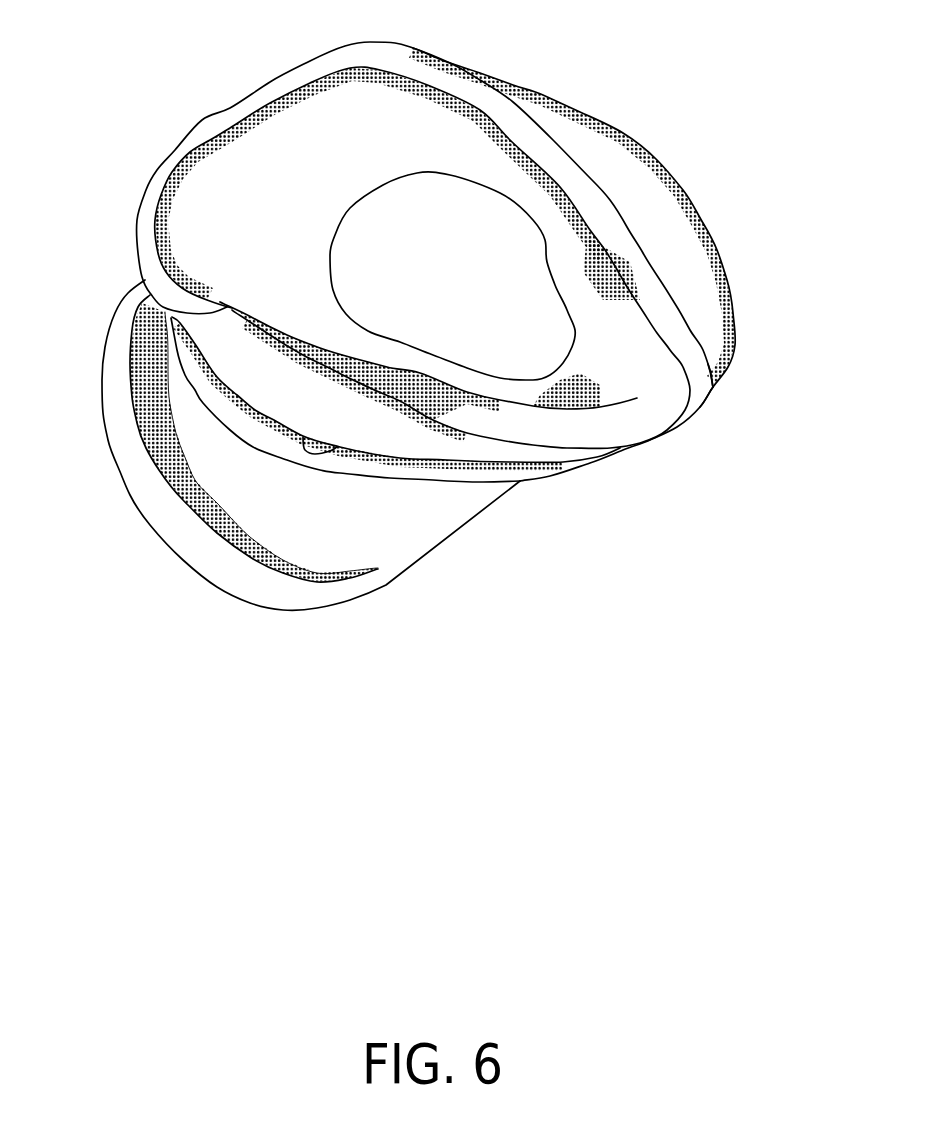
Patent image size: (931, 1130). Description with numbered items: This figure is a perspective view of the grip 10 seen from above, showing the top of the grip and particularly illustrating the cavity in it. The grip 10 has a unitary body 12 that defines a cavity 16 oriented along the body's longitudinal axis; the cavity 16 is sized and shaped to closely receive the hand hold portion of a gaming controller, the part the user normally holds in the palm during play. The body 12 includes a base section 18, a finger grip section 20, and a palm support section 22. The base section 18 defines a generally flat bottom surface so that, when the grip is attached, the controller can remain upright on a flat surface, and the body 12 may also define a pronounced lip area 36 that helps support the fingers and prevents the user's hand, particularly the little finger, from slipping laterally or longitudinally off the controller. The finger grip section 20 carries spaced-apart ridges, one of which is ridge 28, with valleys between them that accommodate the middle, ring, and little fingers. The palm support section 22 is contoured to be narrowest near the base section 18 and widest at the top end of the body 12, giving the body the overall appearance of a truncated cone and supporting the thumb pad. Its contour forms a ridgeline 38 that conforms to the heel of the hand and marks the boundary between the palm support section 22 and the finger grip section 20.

The grip 10 is at (705, 92).
The unitary body 12 is at (545, 82).
The cavity 16 is at (543, 303).
The base section 18 is at (352, 576).
The finger grip section 20 is at (224, 436).
The palm support section 22 is at (700, 277).
The ridge 28 is at (330, 448).
The lip area 36 is at (215, 563).
The ridgeline 38 is at (713, 390).